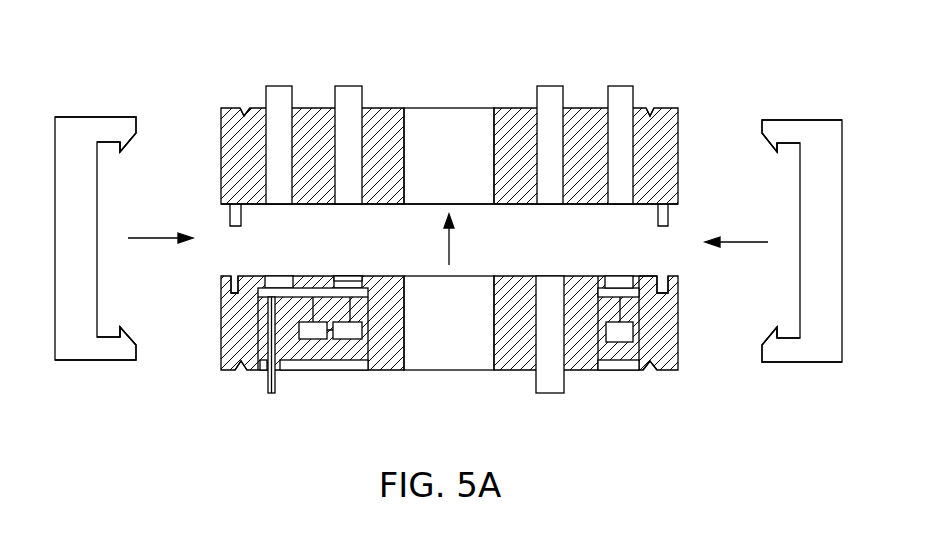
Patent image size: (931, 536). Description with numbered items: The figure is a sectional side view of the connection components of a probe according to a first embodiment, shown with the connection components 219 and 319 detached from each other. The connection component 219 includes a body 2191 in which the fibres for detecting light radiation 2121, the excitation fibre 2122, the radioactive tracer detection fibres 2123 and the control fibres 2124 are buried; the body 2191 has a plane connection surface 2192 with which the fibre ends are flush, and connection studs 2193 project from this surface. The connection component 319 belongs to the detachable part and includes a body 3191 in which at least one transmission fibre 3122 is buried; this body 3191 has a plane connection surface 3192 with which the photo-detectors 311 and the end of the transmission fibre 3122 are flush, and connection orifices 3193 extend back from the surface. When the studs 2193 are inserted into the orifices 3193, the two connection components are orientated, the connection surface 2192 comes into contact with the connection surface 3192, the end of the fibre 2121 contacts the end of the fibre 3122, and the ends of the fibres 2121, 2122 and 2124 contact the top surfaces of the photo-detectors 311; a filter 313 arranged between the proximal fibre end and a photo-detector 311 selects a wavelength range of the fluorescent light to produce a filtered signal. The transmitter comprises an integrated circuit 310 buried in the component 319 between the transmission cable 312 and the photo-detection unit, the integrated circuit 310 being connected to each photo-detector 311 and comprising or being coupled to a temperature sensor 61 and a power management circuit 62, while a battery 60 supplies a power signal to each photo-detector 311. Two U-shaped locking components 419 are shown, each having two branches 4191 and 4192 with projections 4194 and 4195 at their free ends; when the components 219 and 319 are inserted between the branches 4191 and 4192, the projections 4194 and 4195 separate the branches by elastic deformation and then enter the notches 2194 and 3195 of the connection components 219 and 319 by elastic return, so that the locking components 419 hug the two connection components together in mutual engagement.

The connection component 219 is at (447, 125).
The fibre for detecting light radiation 2121 is at (348, 97).
The excitation fibre 2122 is at (550, 97).
The radioactive tracer detection fibre 2123 is at (279, 97).
The control fibre 2124 is at (620, 97).
The body 2191 is at (514, 118).
The plane connection surface 2192 is at (650, 206).
The connection stud 2193 is at (230, 216).
The notch 2194 is at (244, 108).
The connection component 319 is at (448, 345).
The body 3191 is at (514, 355).
The transmission fibre 3122 is at (550, 382).
The plane connection surface 3192 is at (652, 276).
The connection orifice 3193 is at (231, 285).
The notch 3195 is at (244, 370).
The photo-detector 311 is at (280, 281).
The filter 313 is at (358, 280).
The integrated circuit 310 is at (362, 297).
The transmission cable 312 is at (271, 393).
The battery 60 is at (618, 336).
The temperature sensor 61 is at (345, 332).
The power management circuit 62 is at (310, 332).
The locking component 419 is at (448, 241).
The branch 4191 is at (113, 130).
The branch 4192 is at (113, 350).
The projection 4194 is at (122, 150).
The projection 4195 is at (122, 330).